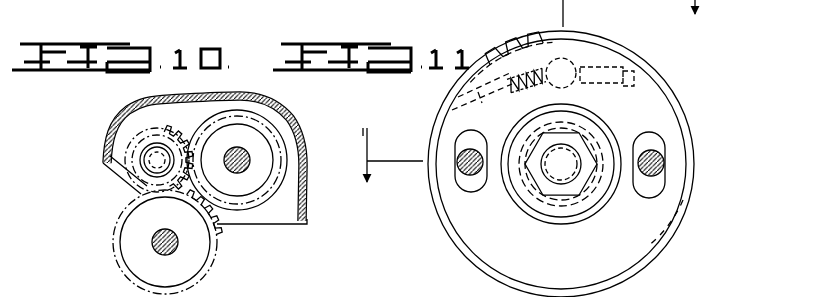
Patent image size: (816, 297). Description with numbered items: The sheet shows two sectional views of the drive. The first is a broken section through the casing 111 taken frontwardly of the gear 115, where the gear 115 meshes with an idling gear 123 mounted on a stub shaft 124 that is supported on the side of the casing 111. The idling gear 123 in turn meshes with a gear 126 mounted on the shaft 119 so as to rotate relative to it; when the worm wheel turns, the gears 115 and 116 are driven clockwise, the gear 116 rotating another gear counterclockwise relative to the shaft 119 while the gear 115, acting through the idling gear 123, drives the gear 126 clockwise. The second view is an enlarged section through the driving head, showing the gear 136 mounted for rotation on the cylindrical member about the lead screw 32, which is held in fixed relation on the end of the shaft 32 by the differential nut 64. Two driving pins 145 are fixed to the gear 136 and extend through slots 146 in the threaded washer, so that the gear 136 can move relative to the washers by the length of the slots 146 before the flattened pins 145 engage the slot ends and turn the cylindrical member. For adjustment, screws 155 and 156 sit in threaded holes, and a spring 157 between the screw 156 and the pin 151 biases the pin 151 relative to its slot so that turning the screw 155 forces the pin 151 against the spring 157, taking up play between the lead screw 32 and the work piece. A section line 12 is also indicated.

In FIG. 10, the casing 111 is at (307, 203).
In FIG. 10, the gear 115 is at (127, 245).
In FIG. 10, the shaft 119 is at (250, 155).
In FIG. 10, the idling gear 123 is at (118, 170).
In FIG. 10, the stub shaft 124 is at (142, 158).
In FIG. 10, the gear 126 is at (257, 192).
In FIG. 10, the pin 151 is at (228, 292).
In FIG. 11, the gear 116 is at (363, 6).
In FIG. 11, the gear 136 is at (565, 37).
In FIG. 11, the spring 157 is at (531, 34).
In FIG. 11, the screw 156 is at (640, 72).
In FIG. 11, the screw 155 is at (456, 99).
In FIG. 11, the driving pins 145 is at (460, 158).
In FIG. 11, the slots 146 is at (465, 186).
In FIG. 11, the differential nut 64 is at (580, 183).
In FIG. 11, the lead screw 32 is at (560, 178).
In FIG. 11, the section line 12- 12 is at (528, 107).